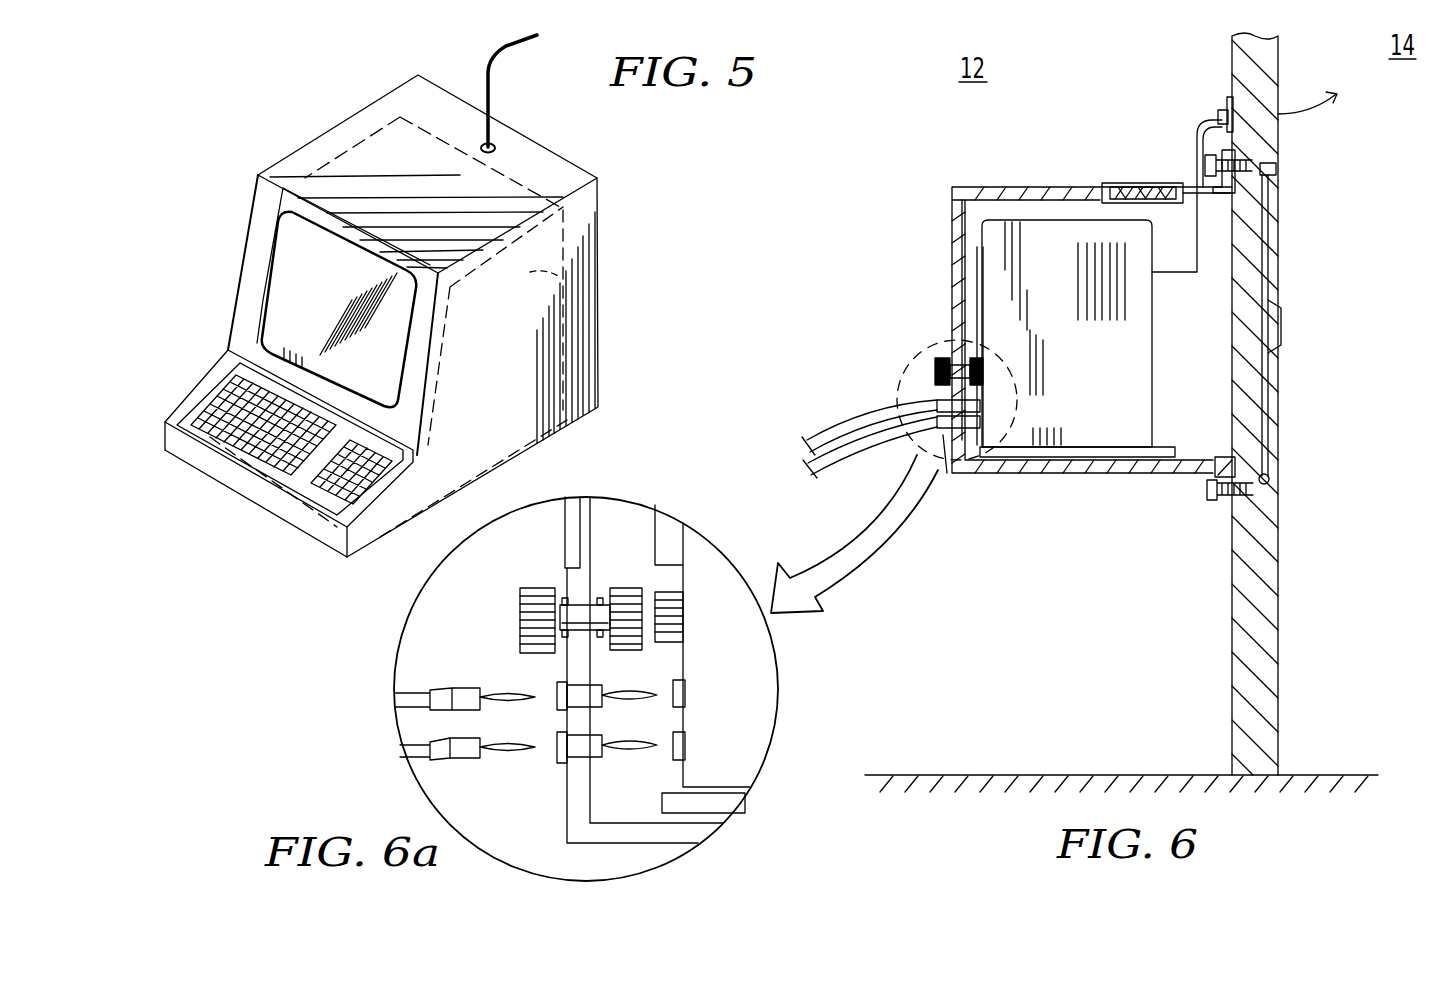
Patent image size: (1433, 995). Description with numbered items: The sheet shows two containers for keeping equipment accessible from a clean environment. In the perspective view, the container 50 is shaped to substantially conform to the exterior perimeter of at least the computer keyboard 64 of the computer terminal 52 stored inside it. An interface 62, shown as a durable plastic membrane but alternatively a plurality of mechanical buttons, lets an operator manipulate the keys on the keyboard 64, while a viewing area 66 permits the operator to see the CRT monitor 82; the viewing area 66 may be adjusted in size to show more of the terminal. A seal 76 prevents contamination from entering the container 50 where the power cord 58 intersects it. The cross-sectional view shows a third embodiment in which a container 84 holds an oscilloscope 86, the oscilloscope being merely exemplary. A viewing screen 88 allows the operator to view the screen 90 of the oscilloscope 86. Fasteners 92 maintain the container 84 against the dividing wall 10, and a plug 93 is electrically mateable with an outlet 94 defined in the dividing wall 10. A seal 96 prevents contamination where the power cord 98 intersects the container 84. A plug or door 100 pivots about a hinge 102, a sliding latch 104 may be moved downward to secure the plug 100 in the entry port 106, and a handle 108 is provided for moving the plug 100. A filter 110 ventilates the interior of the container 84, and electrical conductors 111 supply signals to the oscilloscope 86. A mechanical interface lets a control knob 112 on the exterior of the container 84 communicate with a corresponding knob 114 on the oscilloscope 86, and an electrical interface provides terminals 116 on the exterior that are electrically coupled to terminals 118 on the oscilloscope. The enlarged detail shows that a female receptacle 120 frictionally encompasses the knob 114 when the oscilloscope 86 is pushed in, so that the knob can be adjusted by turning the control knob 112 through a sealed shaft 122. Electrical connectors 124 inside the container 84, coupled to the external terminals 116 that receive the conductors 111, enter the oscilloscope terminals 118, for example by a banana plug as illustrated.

In FIG. 6, the dividing wall 10 is at (1279, 63).
In FIG. 5, the container 50 is at (296, 129).
In FIG. 5, the computer terminal 52 is at (577, 293).
In FIG. 5, the power cord 58 is at (491, 84).
In FIG. 5, the interface 62 is at (203, 385).
In FIG. 5, the computer keyboard 64 is at (238, 432).
In FIG. 5, the viewing area 66 is at (293, 287).
In FIG. 5, the seal 76 is at (497, 148).
In FIG. 5, the CRT monitor 82 is at (321, 317).
In FIG. 6A, the container 84 is at (548, 803).
In FIG. 6, the container 84 is at (912, 212).
In FIG. 6A, the oscilloscope 86 is at (755, 677).
In FIG. 6, the oscilloscope 86 is at (1128, 401).
In FIG. 6, the viewing screen 88 is at (952, 278).
In FIG. 6, the screen 90 is at (977, 318).
In FIG. 6, the fasteners 92 is at (1260, 150).
In FIG. 6, the plug 93 is at (1223, 117).
In FIG. 6, the outlet 94 is at (1228, 103).
In FIG. 6, the seal 96 is at (1197, 185).
In FIG. 6, the power cord 98 is at (1182, 280).
In FIG. 6, the plug or door 100 is at (1270, 265).
In FIG. 6, the hinge 102 is at (1273, 478).
In FIG. 6, the sliding latch 104 is at (1276, 169).
In FIG. 6, the entry port 106 is at (1300, 384).
In FIG. 6, the handle 108 is at (1283, 322).
In FIG. 6, the filter 110 is at (1120, 183).
In FIG. 6A, the electrical conductors 111 is at (458, 737).
In FIG. 6, the electrical conductors 111 is at (867, 410).
In FIG. 6A, the control knob 112 is at (520, 614).
In FIG. 6, the control knob 112 is at (937, 362).
In FIG. 6A, the knob 114 is at (683, 613).
In FIG. 6, the knob 114 is at (983, 365).
In FIG. 6A, the terminals 116 is at (556, 734).
In FIG. 6, the terminals 116 is at (907, 462).
In FIG. 6A, the terminals 118 is at (688, 733).
In FIG. 6, the terminals 118 is at (987, 423).
In FIG. 6A, the female receptacle 120 is at (628, 590).
In FIG. 6A, the sealed shaft 122 is at (583, 612).
In FIG. 6A, the electrical connectors 124 is at (628, 702).